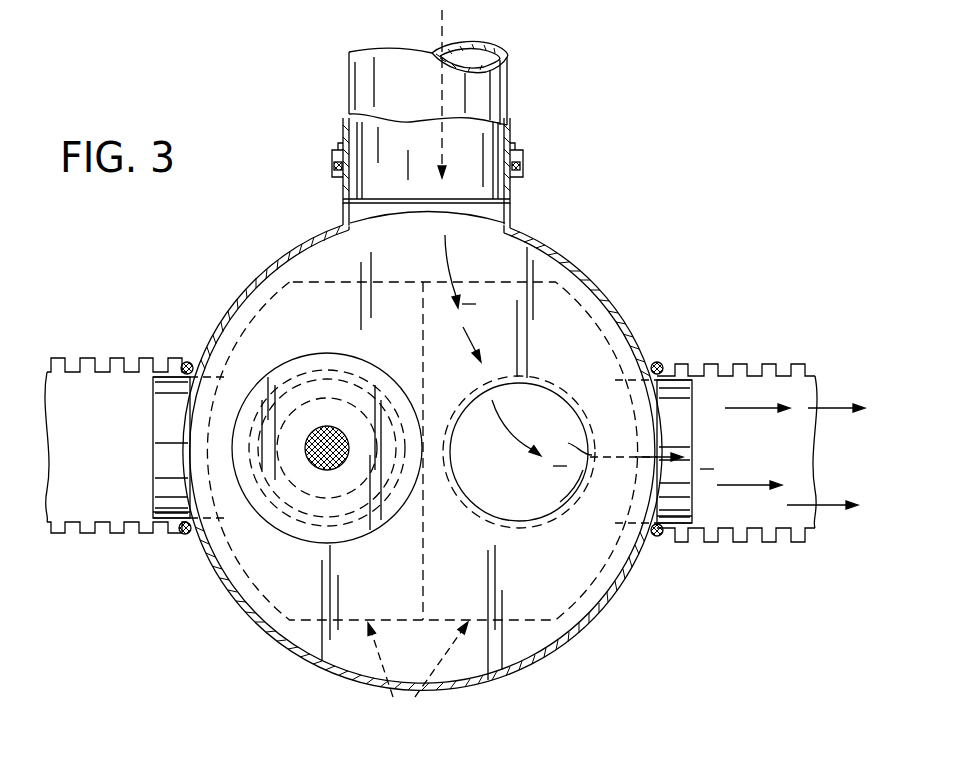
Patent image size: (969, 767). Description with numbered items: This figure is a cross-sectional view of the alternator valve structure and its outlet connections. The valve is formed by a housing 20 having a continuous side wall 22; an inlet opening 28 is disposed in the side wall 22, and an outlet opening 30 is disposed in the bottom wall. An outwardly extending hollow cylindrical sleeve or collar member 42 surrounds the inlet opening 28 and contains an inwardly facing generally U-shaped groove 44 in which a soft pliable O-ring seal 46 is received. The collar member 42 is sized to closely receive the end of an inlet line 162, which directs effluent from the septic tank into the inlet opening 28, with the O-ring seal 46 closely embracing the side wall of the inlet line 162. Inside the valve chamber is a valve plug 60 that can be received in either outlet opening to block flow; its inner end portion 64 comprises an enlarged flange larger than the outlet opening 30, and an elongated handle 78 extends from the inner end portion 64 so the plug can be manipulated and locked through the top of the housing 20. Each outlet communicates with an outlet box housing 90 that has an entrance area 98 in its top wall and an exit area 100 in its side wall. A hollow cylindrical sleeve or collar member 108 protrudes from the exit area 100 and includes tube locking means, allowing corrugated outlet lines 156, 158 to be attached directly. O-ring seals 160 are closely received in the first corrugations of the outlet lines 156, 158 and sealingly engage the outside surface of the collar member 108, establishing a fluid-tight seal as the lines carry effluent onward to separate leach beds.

The housing 20 is at (422, 446).
The side wall 22 is at (580, 633).
The inlet opening 28 is at (452, 211).
The outlet opening 30 is at (503, 480).
The sleeve or collar member 42 is at (513, 201).
The U-shaped groove 44 is at (519, 151).
The O-ring seal 46 is at (526, 167).
The valve plug 60 is at (327, 453).
The inner end portion 64 is at (327, 387).
The handle 78 is at (338, 411).
The outlet box housing 90 is at (397, 702).
The entrance area 98 is at (560, 502).
The exit area 100 is at (159, 452).
The sleeve or collar member 108 is at (162, 514).
The outlet line 156 is at (738, 364).
The outlet line 158 is at (47, 372).
The O-ring seal 160 is at (187, 362).
The inlet line 162 is at (490, 103).